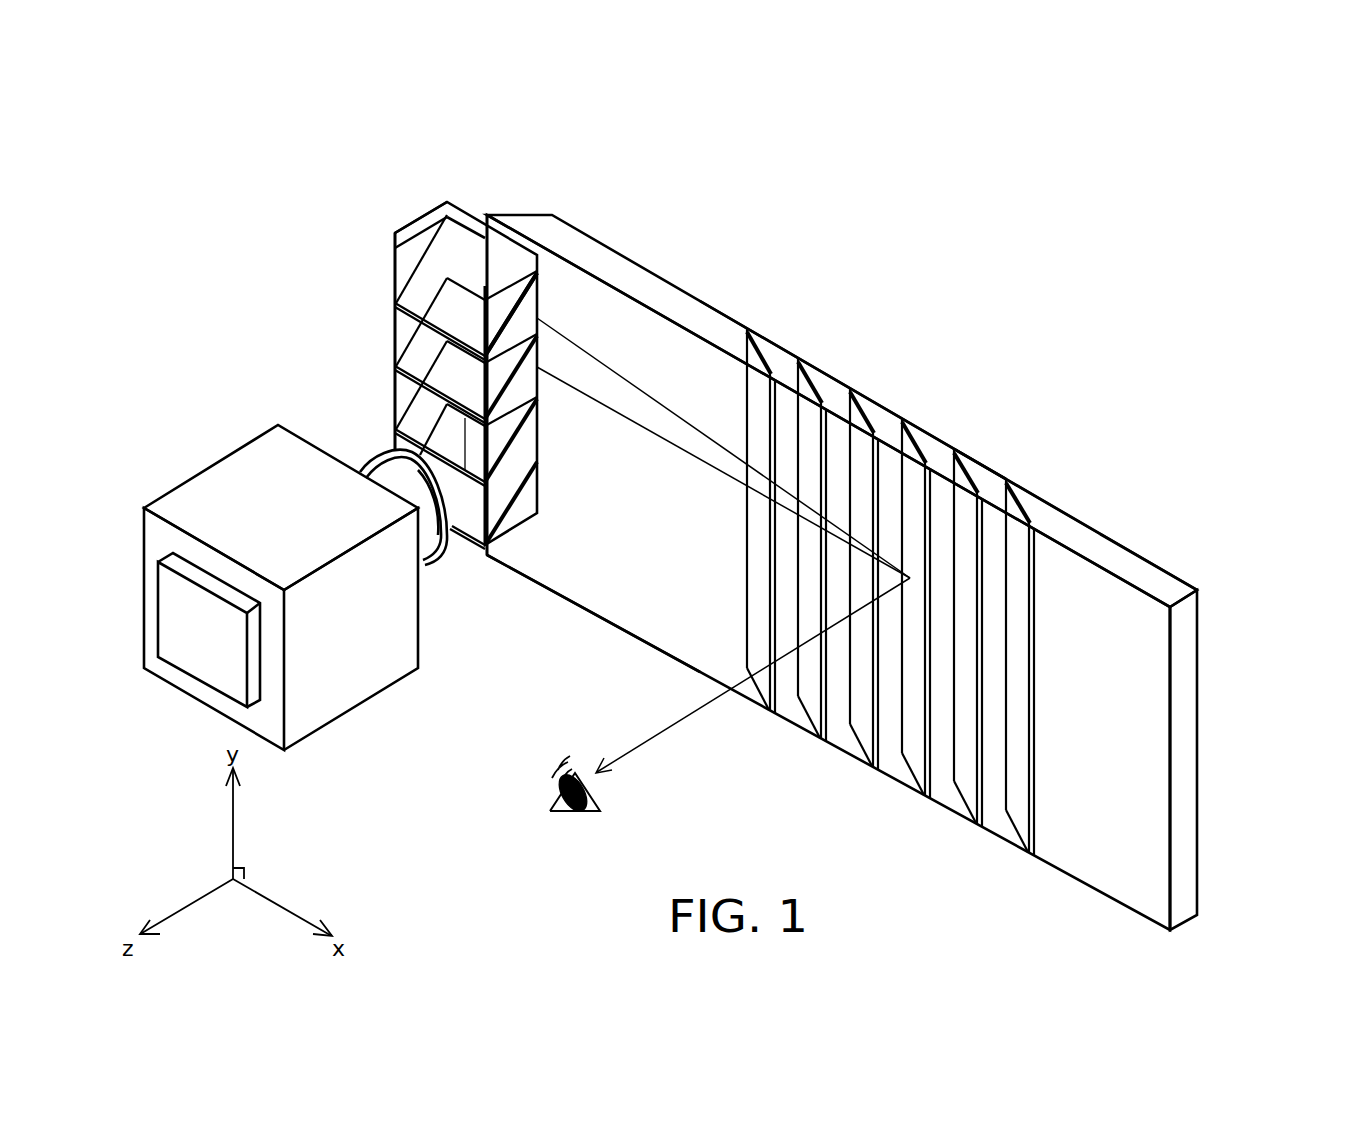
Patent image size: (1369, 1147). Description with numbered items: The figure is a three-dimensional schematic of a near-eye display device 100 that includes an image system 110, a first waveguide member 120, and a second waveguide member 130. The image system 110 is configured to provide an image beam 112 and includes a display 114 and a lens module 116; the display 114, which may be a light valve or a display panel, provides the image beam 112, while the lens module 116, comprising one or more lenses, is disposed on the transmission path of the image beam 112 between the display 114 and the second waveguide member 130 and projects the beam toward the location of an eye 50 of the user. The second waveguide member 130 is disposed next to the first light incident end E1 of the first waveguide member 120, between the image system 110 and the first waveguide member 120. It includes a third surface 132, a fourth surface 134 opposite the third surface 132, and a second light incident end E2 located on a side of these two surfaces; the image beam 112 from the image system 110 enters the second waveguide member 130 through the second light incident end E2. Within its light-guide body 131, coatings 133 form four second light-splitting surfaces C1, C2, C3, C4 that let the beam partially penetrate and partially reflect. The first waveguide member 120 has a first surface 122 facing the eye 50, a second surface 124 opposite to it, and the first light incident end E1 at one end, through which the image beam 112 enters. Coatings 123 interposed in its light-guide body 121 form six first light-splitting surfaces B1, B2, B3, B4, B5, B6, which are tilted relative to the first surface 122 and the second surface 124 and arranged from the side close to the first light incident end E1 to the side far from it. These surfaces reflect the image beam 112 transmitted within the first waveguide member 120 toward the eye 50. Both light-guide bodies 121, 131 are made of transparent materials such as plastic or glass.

The near-eye display device 100 is at (1344, 903).
The image system 110 is at (195, 337).
The image beam 112 is at (470, 500).
The display 114 is at (145, 535).
The lens module 116 is at (375, 463).
The first waveguide member 120 is at (555, 233).
The light-guide body 121 is at (950, 415).
The first surface 122 is at (1140, 700).
The coatings 123 is at (995, 468).
The second surface 124 is at (1162, 558).
The second waveguide member 130 is at (420, 220).
The light-guide body 131 is at (527, 317).
The third surface 132 is at (393, 330).
The coatings 133 is at (487, 287).
The fourth surface 134 is at (472, 208).
The first light incident end E1 is at (495, 327).
The second light incident end E2 is at (517, 520).
The first light-splitting surface B1 is at (747, 353).
The first light-splitting surface B2 is at (798, 384).
The first light-splitting surface B3 is at (851, 414).
The first light-splitting surface B4 is at (903, 445).
The first light-splitting surface B5 is at (957, 476).
The first light-splitting surface B6 is at (1015, 488).
The second light-splitting surface C1 is at (500, 478).
The second light-splitting surface C2 is at (523, 440).
The second light-splitting surface C3 is at (530, 360).
The second light-splitting surface C4 is at (530, 297).
The eye 50 is at (560, 793).